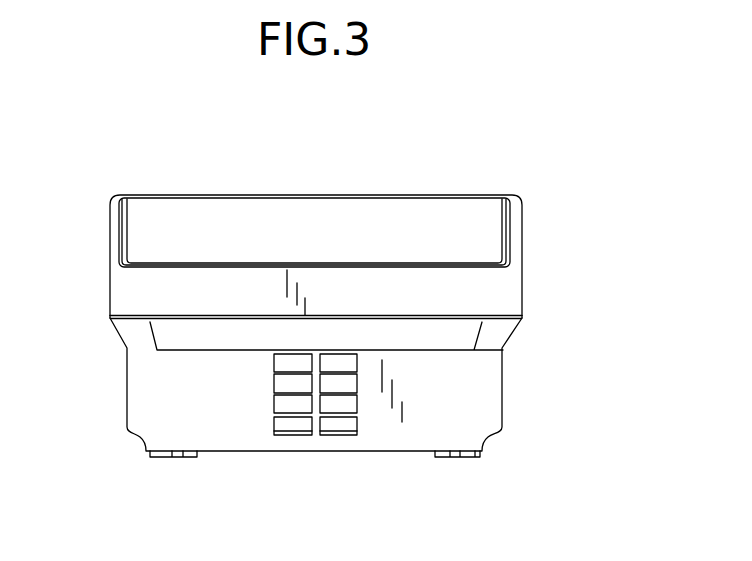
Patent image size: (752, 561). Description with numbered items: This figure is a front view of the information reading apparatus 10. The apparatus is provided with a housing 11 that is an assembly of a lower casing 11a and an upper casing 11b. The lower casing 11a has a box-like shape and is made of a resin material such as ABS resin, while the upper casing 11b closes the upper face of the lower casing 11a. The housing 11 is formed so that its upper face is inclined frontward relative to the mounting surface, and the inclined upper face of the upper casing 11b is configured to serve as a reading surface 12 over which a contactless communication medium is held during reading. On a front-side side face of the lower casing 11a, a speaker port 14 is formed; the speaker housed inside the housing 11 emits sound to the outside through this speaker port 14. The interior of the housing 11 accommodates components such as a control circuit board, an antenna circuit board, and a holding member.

The information reading apparatus 10 is at (150, 146).
The housing 11 is at (612, 290).
The lower casing 11a is at (503, 375).
The upper casing 11b is at (522, 285).
The reading surface 12 is at (319, 204).
The speaker port 14 is at (315, 436).